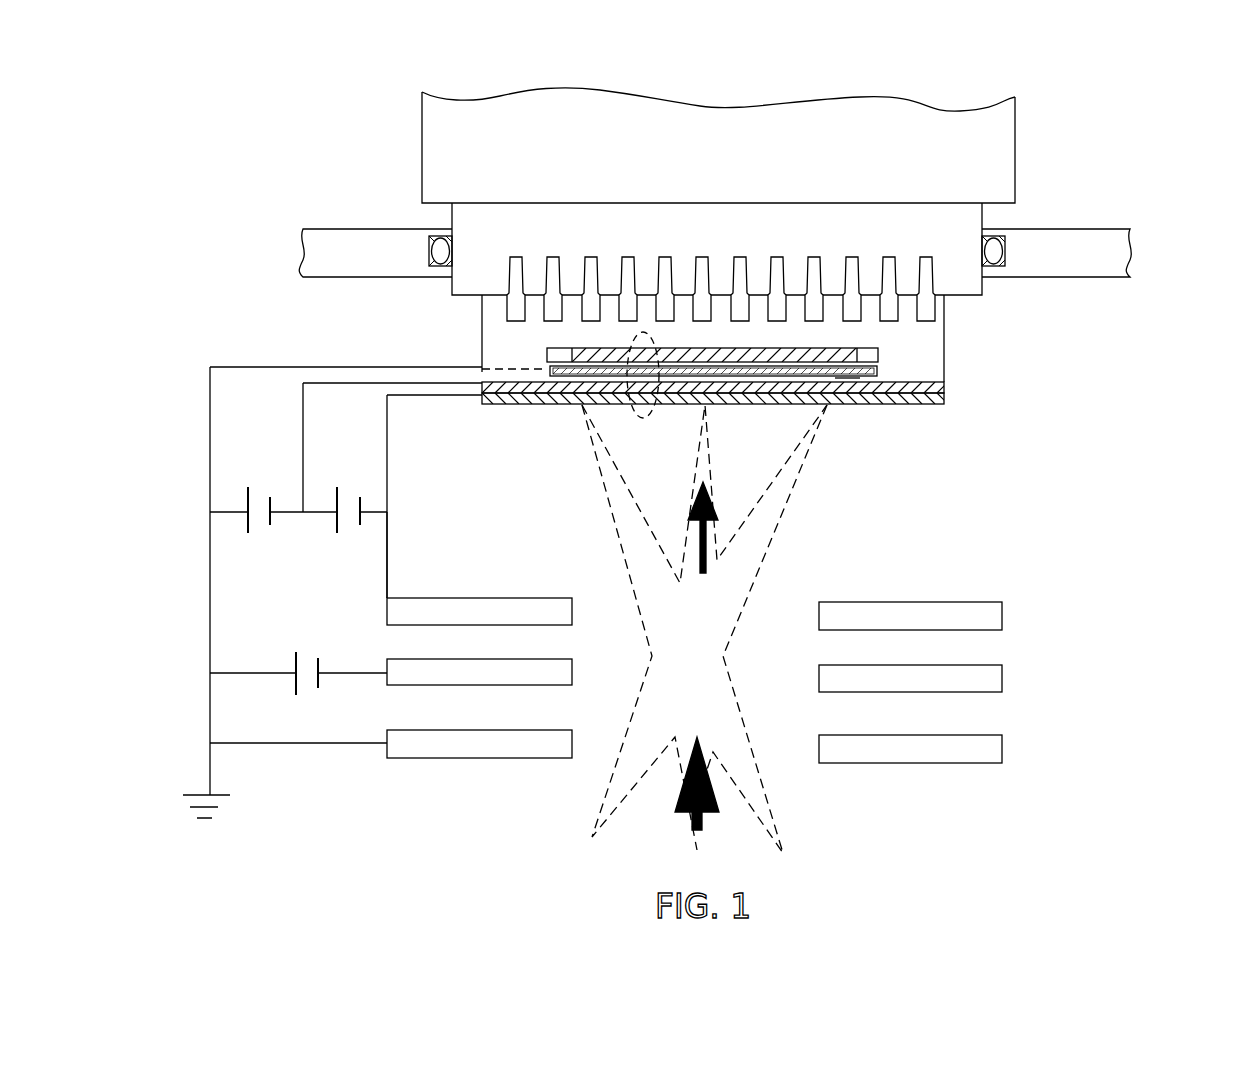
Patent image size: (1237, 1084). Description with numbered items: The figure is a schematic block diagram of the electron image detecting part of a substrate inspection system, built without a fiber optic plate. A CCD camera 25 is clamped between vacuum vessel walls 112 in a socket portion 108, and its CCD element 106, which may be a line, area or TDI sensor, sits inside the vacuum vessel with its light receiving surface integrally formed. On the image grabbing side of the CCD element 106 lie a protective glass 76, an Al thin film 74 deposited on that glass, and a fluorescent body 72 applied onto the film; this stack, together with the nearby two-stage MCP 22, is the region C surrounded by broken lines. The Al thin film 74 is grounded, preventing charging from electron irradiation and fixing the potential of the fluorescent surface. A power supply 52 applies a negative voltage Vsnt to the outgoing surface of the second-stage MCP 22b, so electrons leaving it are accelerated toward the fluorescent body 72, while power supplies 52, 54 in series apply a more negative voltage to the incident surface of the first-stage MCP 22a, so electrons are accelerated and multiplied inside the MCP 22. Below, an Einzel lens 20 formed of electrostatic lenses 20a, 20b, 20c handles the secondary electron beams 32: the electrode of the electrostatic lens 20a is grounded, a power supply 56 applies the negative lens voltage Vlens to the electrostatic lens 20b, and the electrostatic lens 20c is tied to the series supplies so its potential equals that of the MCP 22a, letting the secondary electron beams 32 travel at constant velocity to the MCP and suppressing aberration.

The Einzel lens 20 is at (769, 685).
The electrostatic lens 20a is at (735, 747).
The electrostatic lens 20b is at (1002, 680).
The electrostatic lens 20c is at (1002, 618).
The MCP 22 is at (798, 405).
The MCP 22a is at (944, 398).
The MCP 22b is at (944, 387).
The CCD camera 25 is at (1015, 155).
The secondary electron beams 32 is at (780, 517).
The power supply 52 is at (257, 522).
The power supply 54 is at (347, 522).
The power supply 56 is at (308, 690).
The fluorescent body 72 is at (848, 378).
The Al thin film 74 is at (877, 362).
The protective glass 76 is at (548, 363).
The CCD element 106 is at (838, 342).
The socket portion 108 is at (958, 278).
The vacuum vessel walls 112 is at (1115, 250).
The region C is at (657, 336).